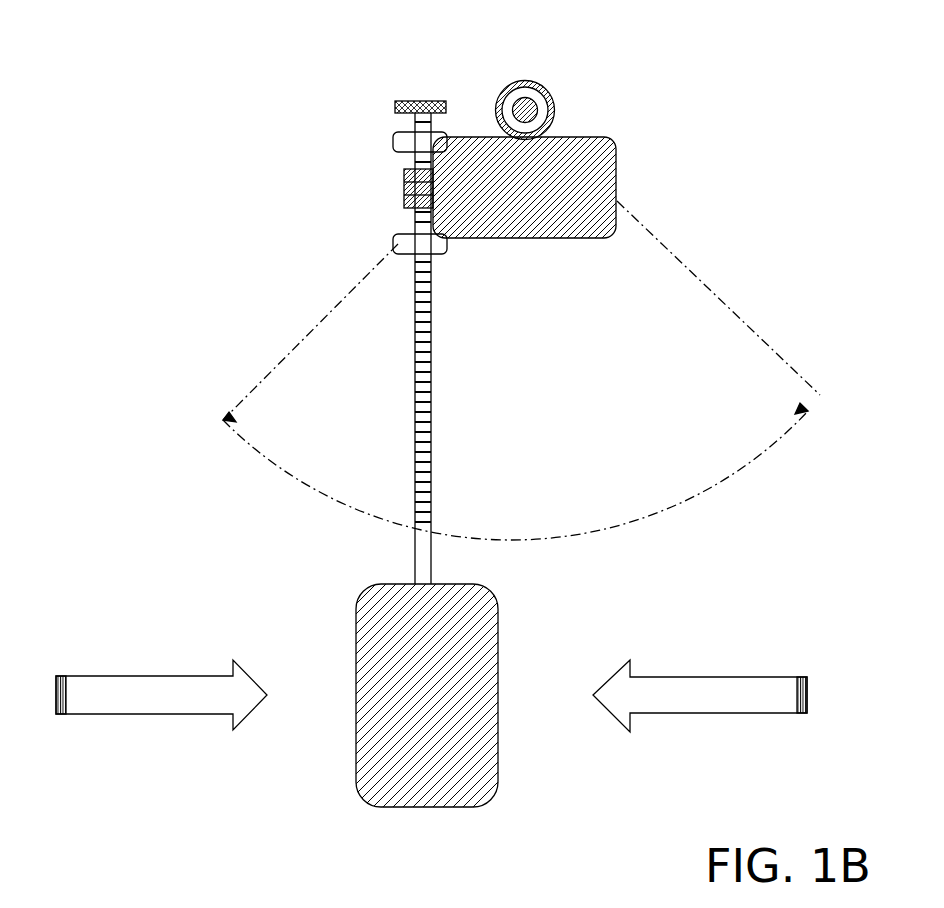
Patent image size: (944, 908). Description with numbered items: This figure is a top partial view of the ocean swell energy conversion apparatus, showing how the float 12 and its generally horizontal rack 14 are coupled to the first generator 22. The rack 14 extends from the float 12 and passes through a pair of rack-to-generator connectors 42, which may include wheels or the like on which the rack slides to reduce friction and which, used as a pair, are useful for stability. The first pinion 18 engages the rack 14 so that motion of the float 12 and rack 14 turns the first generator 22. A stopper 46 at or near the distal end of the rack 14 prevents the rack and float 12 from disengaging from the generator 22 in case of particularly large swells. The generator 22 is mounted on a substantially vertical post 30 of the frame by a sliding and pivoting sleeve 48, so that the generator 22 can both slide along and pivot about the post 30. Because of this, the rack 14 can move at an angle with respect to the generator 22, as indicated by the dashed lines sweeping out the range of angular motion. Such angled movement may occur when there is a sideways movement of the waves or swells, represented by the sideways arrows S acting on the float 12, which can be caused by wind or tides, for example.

The float 12 is at (500, 601).
The generally horizontal rack 14 is at (432, 352).
The first pinion 18 is at (404, 183).
The first generator 22 is at (612, 137).
The vertical post 30 is at (513, 98).
The first rack-to-generator connector 42 is at (393, 141).
The stopper 46 is at (407, 100).
The sliding and pivoting sleeve 48 is at (504, 87).
The sideways arrows S is at (130, 676).